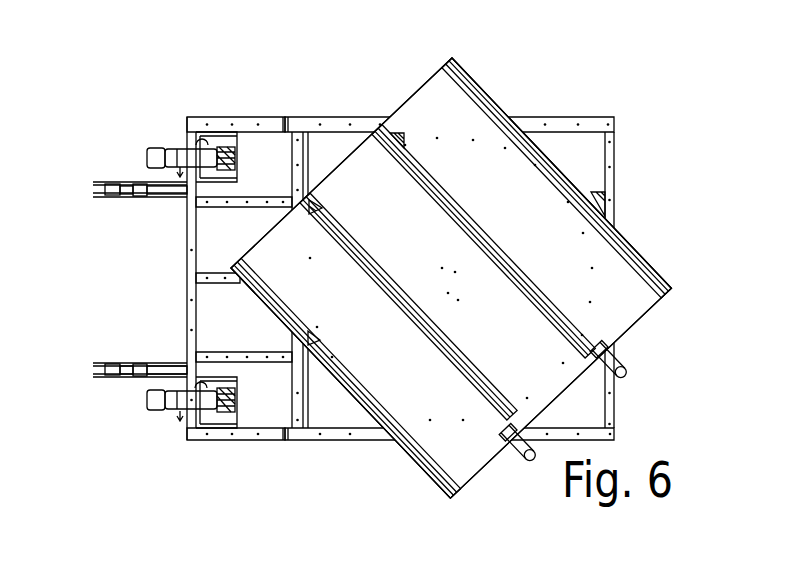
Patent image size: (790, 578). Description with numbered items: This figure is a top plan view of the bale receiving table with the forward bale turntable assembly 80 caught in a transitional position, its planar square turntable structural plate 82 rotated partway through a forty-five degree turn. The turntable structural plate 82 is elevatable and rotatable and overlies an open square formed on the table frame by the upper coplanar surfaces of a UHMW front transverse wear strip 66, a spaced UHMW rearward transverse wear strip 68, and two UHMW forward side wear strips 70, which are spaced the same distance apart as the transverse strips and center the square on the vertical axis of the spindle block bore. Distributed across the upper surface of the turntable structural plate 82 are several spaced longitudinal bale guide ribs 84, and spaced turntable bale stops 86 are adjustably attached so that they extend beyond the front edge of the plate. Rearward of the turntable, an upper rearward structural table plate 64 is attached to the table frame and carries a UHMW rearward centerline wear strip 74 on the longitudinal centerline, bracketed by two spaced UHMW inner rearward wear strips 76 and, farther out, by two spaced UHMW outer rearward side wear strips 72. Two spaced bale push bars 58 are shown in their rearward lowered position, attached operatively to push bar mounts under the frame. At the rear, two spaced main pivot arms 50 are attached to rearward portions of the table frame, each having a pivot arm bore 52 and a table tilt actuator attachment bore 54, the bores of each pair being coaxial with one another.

The main pivot arm 50 is at (112, 197).
The pivot arm bore 52 is at (137, 184).
The table tilt actuator attachment bore 54 is at (101, 182).
The bale push bar 58 is at (157, 148).
The upper rearward structural table plate 64 is at (188, 318).
The front transverse wear strip 66 is at (612, 153).
The rearward transverse wear strip 68 is at (294, 171).
The forward side wear strip 70 is at (330, 117).
The outer rearward side wear strip 72 is at (244, 117).
The rearward centerline wear strip 74 is at (188, 277).
The inner rearward wear strip 76 is at (186, 201).
The forward bale turntable assembly 80 is at (490, 66).
The turntable structural plate 82 is at (463, 126).
The bale guide rib 84 is at (272, 304).
The turntable bale stop 86 is at (627, 373).